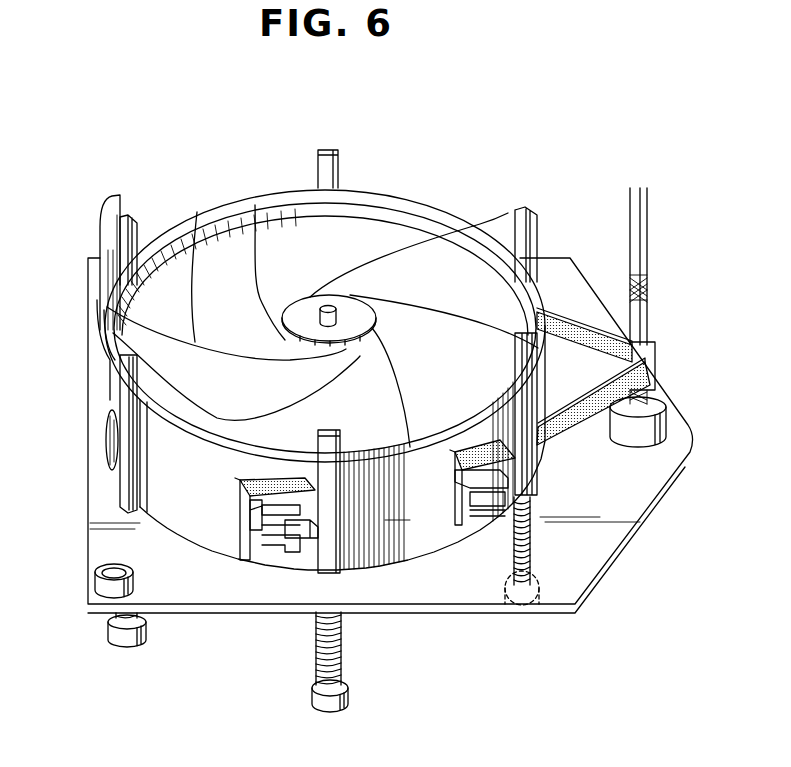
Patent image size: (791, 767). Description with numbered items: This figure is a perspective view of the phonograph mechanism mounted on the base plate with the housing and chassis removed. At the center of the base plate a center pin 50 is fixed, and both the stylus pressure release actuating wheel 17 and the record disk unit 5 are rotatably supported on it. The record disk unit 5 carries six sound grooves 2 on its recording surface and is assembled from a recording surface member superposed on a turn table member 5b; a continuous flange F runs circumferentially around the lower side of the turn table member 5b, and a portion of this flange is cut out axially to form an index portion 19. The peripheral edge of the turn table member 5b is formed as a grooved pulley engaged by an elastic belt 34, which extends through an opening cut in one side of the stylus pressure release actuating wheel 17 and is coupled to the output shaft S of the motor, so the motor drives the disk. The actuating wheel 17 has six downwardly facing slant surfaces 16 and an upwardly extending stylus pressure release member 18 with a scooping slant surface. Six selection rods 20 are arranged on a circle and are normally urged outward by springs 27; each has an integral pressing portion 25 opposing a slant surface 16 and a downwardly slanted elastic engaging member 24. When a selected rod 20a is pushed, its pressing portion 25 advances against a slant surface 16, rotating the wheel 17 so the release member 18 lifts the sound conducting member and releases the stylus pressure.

The sound grooves 2 is at (197, 213).
The record disk unit 5 is at (473, 273).
The turn table member 5b is at (248, 512).
The slant surface 16 is at (307, 550).
The stylus pressure release actuating wheel 17 is at (100, 383).
The stylus pressure release member 18 is at (100, 243).
The index portion 19 is at (258, 533).
The selection rods 20 is at (328, 151).
The selection rod 20a is at (523, 608).
The elastic engaging member 24 is at (487, 497).
The pressing portion 25 is at (290, 540).
The springs 27 is at (341, 648).
The elastic belt 34 is at (600, 395).
The center pin 50 is at (327, 306).
The continuous flange F is at (107, 440).
The output shaft S is at (647, 303).